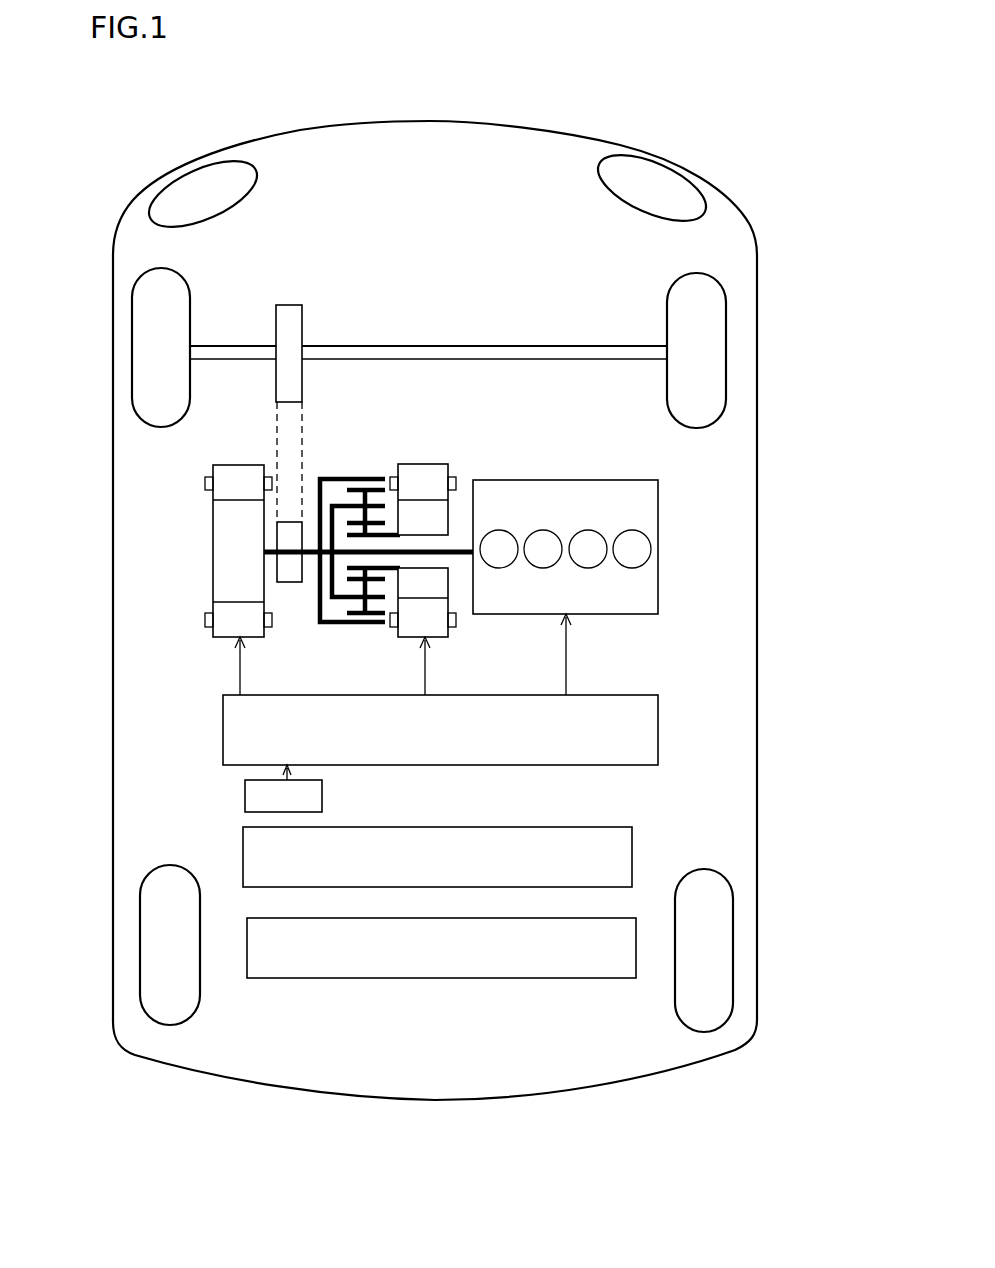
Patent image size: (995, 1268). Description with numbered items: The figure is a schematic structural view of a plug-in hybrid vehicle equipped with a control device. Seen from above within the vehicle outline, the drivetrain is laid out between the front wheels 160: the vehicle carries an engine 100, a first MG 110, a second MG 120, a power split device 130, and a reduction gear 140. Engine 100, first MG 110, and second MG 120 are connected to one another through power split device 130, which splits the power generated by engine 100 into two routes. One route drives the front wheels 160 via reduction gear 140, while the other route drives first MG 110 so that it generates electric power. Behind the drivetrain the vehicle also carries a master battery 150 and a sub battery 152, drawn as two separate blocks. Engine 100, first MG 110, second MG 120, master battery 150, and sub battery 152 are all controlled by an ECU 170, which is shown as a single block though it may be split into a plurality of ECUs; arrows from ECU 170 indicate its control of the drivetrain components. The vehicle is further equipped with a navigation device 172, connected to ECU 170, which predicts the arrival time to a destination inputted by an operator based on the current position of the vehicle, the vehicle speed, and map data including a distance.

The engine 100 is at (512, 480).
The first MG 110 is at (427, 464).
The second MG 120 is at (213, 550).
The power split device 130 is at (350, 479).
The reduction gear 140 is at (284, 292).
The master battery 150 is at (243, 847).
The sub battery 152 is at (405, 980).
The front wheels 160 is at (132, 358).
The ECU 170 is at (223, 738).
The navigation device 172 is at (245, 796).